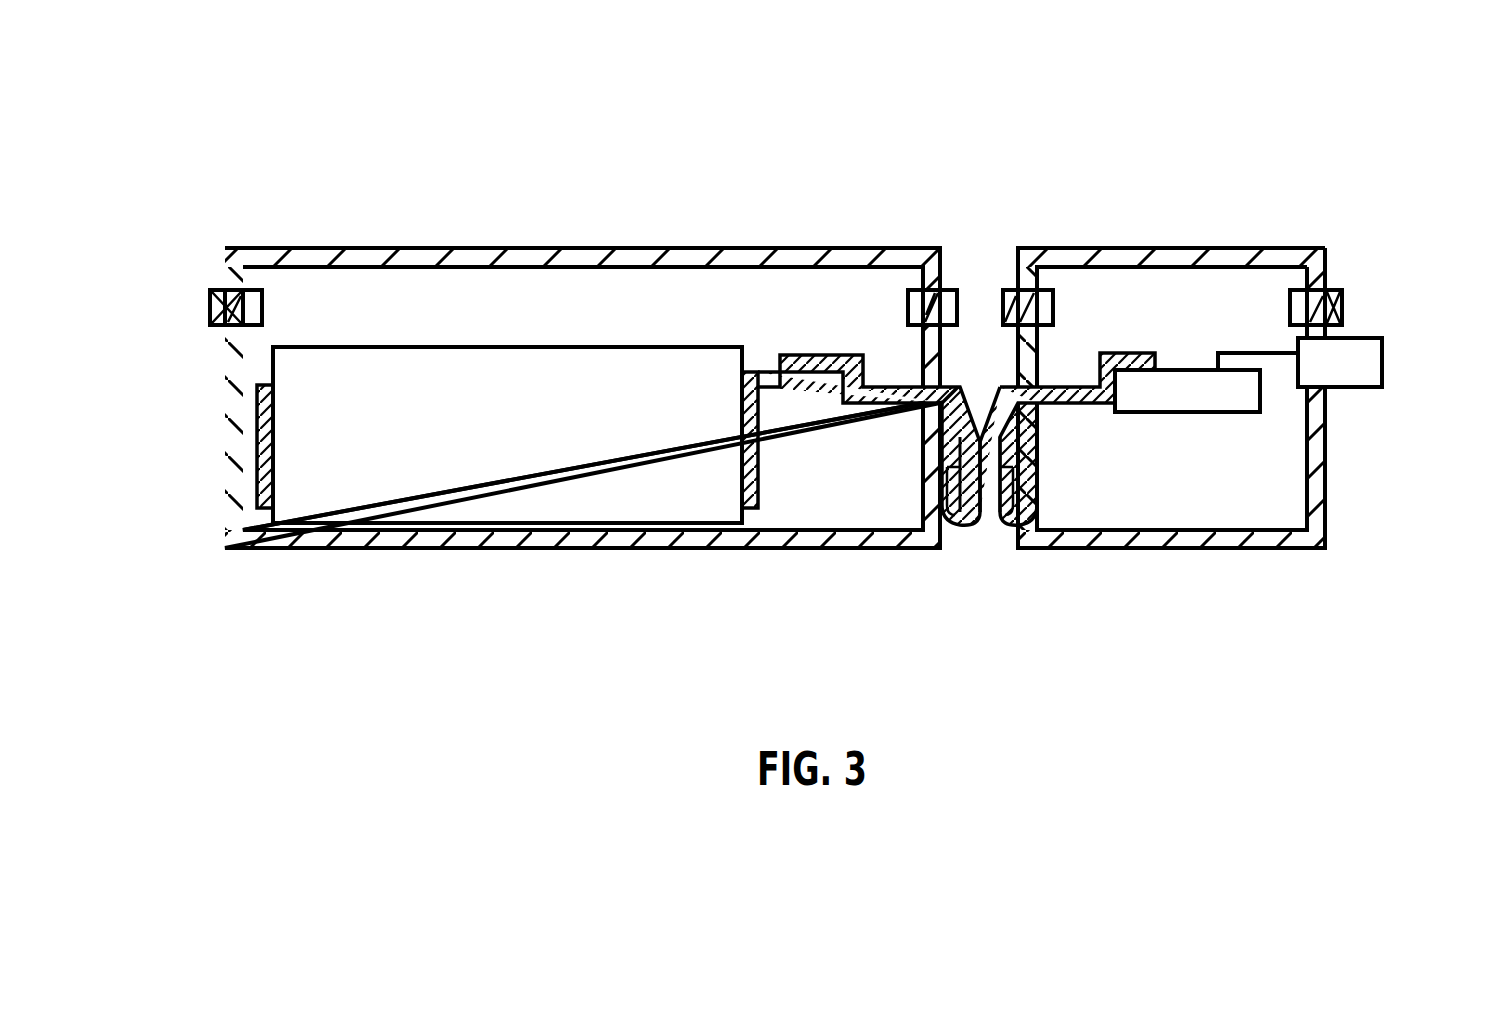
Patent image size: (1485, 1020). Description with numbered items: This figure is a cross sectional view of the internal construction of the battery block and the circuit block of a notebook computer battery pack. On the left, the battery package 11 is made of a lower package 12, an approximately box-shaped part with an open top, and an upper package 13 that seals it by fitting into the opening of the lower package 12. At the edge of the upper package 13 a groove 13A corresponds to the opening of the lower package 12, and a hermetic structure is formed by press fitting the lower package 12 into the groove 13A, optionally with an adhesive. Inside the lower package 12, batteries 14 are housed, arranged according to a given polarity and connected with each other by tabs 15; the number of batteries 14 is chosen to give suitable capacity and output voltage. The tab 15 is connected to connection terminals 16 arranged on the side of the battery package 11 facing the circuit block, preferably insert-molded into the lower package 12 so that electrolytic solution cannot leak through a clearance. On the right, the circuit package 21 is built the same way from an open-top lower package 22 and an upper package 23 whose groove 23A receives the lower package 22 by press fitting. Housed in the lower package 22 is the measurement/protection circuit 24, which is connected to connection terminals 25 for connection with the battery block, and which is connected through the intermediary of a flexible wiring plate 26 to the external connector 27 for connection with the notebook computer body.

The battery package 11 is at (527, 323).
The lower package 12 is at (460, 165).
The upper package 13 is at (435, 252).
The groove 13A is at (227, 312).
The battery 14 is at (632, 497).
The tab 15 is at (262, 508).
The connection terminal 16 is at (893, 403).
The circuit package 21 is at (1229, 323).
The lower package 22 is at (1253, 165).
The upper package 23 is at (1233, 252).
The groove 23A is at (1333, 312).
The measurement/protection circuit 24 is at (1215, 412).
The connection terminal 25 is at (1075, 403).
The flexible wiring plate 26 is at (1272, 362).
The external connector 27 is at (1365, 364).